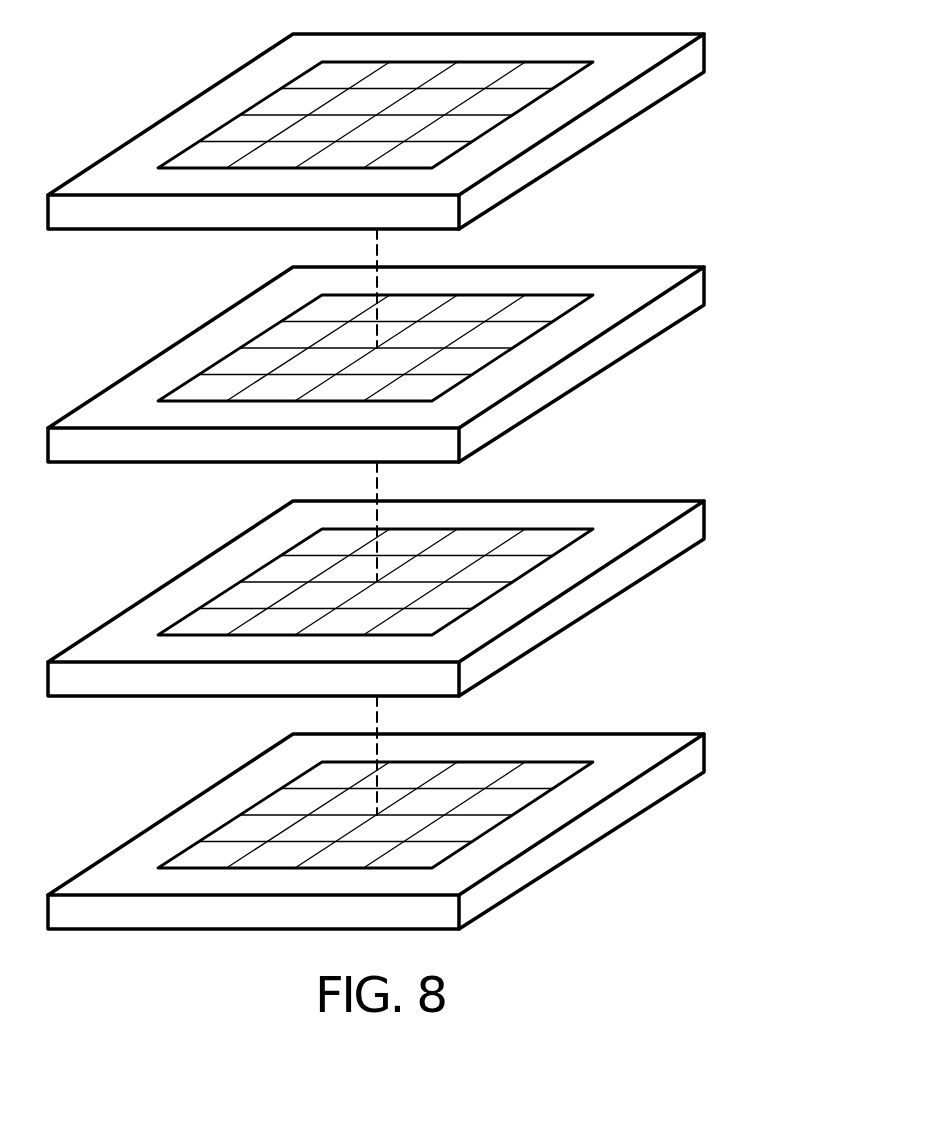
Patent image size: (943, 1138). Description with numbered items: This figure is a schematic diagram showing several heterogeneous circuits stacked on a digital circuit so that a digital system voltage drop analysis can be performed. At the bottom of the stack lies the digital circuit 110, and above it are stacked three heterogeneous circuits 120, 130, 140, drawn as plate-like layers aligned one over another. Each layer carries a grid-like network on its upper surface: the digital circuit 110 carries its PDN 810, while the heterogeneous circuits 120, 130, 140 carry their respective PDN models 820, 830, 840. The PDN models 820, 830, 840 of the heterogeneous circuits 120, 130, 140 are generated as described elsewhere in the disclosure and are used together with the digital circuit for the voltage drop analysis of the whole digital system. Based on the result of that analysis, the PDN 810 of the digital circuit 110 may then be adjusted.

The digital circuit 110 is at (615, 814).
The heterogeneous circuit 120 is at (615, 581).
The heterogeneous circuit 130 is at (615, 347).
The heterogeneous circuit 140 is at (615, 114).
The PDN 810 is at (523, 809).
The PDN model 820 is at (523, 576).
The PDN model 830 is at (523, 342).
The PDN model 840 is at (523, 109).